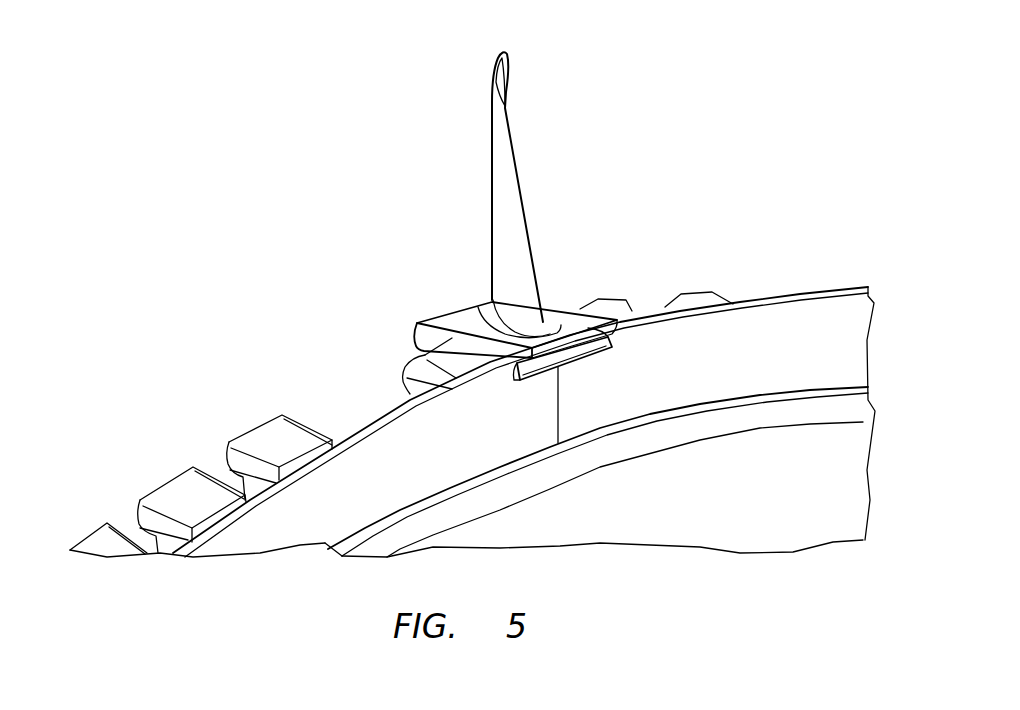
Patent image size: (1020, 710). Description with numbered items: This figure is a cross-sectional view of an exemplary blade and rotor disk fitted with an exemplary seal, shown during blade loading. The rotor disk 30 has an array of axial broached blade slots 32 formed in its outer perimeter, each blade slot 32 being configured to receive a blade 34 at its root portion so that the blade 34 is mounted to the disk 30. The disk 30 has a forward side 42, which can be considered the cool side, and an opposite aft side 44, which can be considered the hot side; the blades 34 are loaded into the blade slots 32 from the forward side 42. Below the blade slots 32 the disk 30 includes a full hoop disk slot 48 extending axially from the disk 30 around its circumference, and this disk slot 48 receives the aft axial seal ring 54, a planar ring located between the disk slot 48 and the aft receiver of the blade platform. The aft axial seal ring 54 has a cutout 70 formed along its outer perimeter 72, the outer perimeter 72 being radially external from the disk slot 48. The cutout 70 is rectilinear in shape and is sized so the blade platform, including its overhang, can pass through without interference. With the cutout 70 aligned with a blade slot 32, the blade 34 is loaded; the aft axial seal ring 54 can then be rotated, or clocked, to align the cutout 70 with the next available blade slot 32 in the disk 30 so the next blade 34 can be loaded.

The rotor disk 30 is at (792, 515).
The blade slot 32 is at (301, 407).
The blade 34 is at (490, 78).
The forward side 42 is at (113, 410).
The aft side 44 is at (605, 512).
The disk slot 48 is at (780, 416).
The aft axial seal ring 54 is at (400, 470).
The cutout 70 is at (588, 367).
The outer perimeter 72 is at (793, 291).